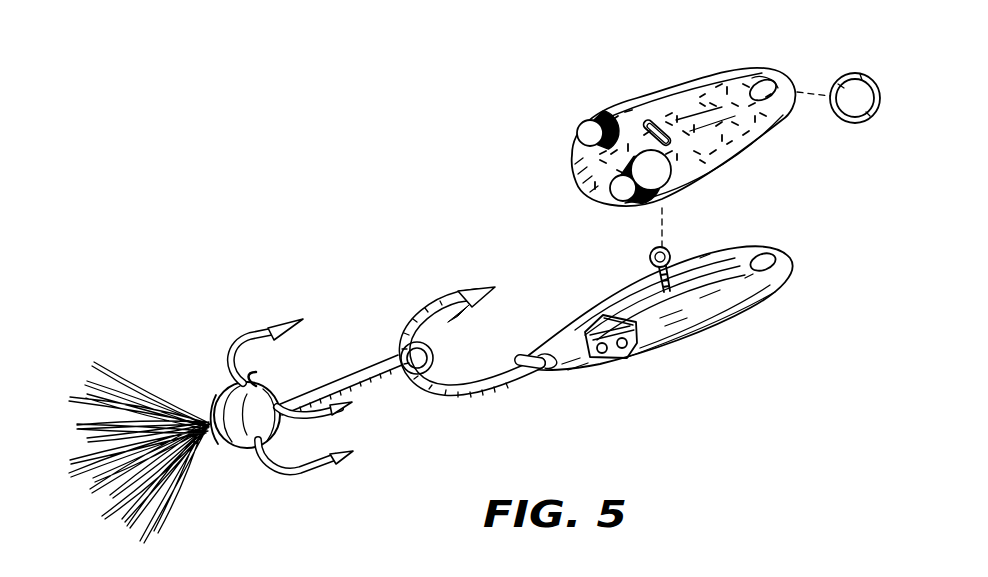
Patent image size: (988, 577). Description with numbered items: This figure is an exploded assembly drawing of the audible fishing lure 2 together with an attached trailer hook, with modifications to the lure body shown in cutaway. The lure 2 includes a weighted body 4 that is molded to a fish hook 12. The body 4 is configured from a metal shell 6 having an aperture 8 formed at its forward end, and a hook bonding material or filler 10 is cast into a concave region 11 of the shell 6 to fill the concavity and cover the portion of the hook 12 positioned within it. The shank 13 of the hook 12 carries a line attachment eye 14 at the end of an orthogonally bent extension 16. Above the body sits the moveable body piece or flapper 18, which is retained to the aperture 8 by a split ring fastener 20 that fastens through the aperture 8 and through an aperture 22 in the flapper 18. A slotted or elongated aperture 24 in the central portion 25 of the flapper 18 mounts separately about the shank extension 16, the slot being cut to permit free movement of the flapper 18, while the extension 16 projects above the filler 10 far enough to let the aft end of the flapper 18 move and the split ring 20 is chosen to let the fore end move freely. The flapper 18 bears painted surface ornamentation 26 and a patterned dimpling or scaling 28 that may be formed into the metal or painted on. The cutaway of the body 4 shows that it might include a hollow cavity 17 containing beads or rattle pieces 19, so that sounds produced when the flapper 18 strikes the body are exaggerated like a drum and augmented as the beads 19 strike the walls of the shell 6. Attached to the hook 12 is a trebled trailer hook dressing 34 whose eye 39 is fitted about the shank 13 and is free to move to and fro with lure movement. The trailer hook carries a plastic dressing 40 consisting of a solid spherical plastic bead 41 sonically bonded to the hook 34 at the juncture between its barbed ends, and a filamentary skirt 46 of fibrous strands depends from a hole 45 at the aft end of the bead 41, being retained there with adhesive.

The audible fishing lure 2 is at (446, 189).
The weighted body 4 is at (682, 344).
The metal shell 6 is at (792, 272).
The aperture 8 is at (767, 260).
The hook bonding material or filler 10 is at (598, 313).
The concave region 11 is at (590, 331).
The fish hook 12 is at (422, 310).
The shank 13 is at (513, 384).
The line attachment eye 14 is at (667, 252).
The orthogonally bent extension 16 is at (657, 277).
The hollow cavity 17 is at (603, 352).
The flapper 18 is at (582, 134).
The beads or rattle pieces 19 is at (636, 355).
The split ring fastener 20 is at (878, 101).
The aperture 22 is at (770, 86).
The slotted or elongated aperture 24 is at (650, 127).
The central portion 25 is at (702, 135).
The painted surface ornamentation 26 is at (610, 189).
The patterned dimpling or scaling 28 is at (690, 102).
The trebled trailer hook dressing 34 is at (255, 341).
The eye 39 is at (405, 376).
The plastic dressing 40 is at (221, 389).
The solid spherical plastic bead 41 is at (256, 380).
The hole 45 is at (219, 442).
The filamentary skirt 46 is at (152, 522).